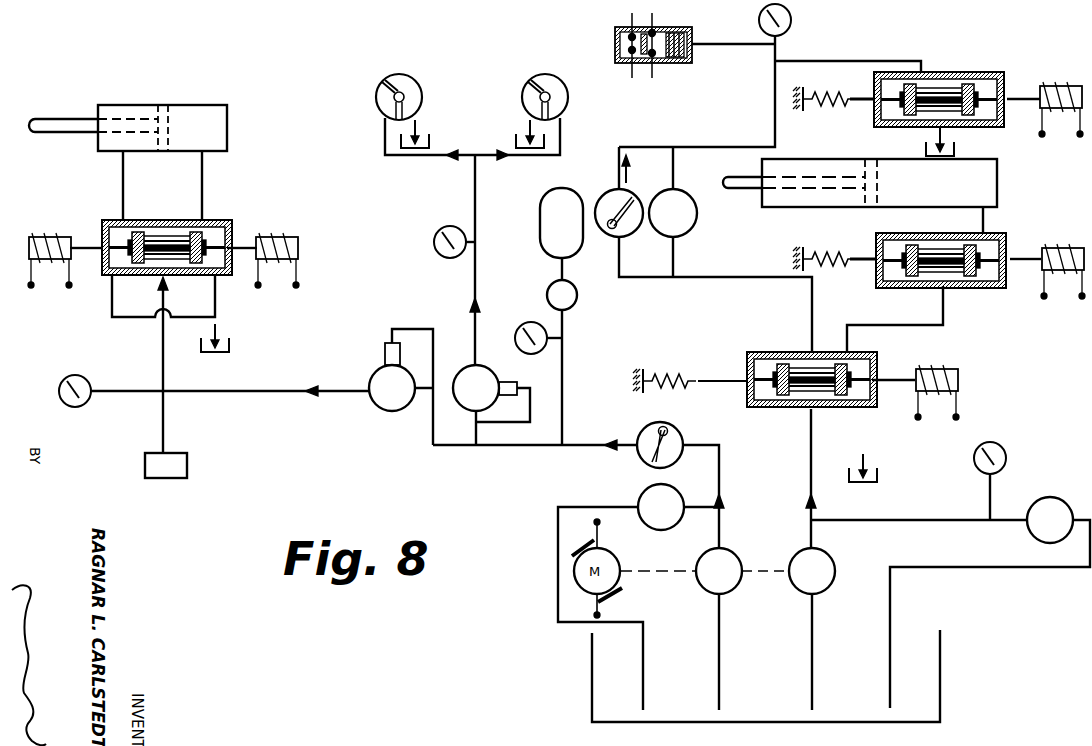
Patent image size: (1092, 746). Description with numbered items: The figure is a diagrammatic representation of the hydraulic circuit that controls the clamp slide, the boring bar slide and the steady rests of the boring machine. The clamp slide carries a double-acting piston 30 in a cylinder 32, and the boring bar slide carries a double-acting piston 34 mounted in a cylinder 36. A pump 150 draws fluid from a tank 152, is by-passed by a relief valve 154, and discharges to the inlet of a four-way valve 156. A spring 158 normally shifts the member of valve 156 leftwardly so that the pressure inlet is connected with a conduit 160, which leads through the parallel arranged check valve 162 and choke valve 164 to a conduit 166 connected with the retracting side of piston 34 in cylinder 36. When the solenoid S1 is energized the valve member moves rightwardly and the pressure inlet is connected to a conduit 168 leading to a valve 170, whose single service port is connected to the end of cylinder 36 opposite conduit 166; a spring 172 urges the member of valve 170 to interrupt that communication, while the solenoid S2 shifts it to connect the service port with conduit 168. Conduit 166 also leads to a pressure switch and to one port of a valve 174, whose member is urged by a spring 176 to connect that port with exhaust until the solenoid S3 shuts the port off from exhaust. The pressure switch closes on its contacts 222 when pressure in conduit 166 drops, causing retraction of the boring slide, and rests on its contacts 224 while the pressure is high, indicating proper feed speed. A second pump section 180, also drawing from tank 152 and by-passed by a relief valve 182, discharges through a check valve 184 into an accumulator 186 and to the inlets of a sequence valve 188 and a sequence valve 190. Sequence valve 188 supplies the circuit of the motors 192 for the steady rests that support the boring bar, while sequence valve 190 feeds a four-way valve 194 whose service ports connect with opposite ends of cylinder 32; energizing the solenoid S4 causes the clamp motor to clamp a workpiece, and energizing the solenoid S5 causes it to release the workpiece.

The double-acting piston 30 is at (177, 117).
The cylinder 32 is at (228, 123).
The double-acting piston 34 is at (877, 178).
The cylinder 36 is at (1000, 172).
The pump 150 is at (836, 566).
The tank 152 is at (942, 640).
The relief valve 154 is at (1046, 498).
The four-way valve 156 is at (768, 352).
The spring 158 is at (672, 377).
The conduit 160 is at (746, 273).
The check valve 162 is at (606, 192).
The choke valve 164 is at (690, 192).
The conduit 166 is at (774, 114).
The conduit 168 is at (872, 326).
The valve 170 is at (1012, 240).
The spring 172 is at (848, 260).
The valve 174 is at (980, 72).
The spring 176 is at (848, 100).
The pump section 180 is at (742, 548).
The relief valve 182 is at (638, 506).
The check valve 184 is at (638, 432).
The accumulator 186 is at (541, 210).
The sequence valve 188 is at (474, 435).
The sequencing valve 190 is at (376, 419).
The motors 192 is at (534, 78).
The four-way valve 194 is at (222, 226).
The contacts 222 is at (647, 58).
The contacts 224 is at (610, 44).
The solenoid S1 is at (959, 372).
The solenoid S2 is at (1070, 248).
The solenoid S3 is at (1061, 84).
The solenoid S4 is at (38, 236).
The solenoid S5 is at (282, 236).